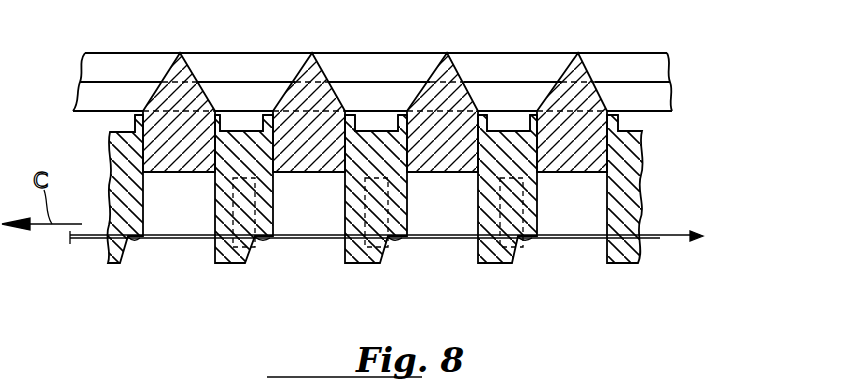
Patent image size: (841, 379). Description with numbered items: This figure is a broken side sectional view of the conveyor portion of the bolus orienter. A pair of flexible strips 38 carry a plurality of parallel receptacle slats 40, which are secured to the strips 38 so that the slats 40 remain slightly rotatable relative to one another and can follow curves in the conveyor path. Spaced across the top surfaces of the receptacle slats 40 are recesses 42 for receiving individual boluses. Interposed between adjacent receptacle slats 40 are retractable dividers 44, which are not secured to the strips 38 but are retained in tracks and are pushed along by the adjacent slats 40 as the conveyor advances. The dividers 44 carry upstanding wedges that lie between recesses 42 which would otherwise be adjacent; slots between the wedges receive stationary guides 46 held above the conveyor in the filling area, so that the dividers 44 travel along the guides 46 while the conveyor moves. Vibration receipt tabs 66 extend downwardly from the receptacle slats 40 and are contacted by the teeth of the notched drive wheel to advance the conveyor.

The flexible strips 38 is at (580, 238).
The receptacle slats 40 is at (218, 200).
The recesses 42 is at (635, 125).
The retractable dividers 44 is at (172, 65).
The guides 46 is at (660, 70).
The vibration receipt tabs 66 is at (355, 264).